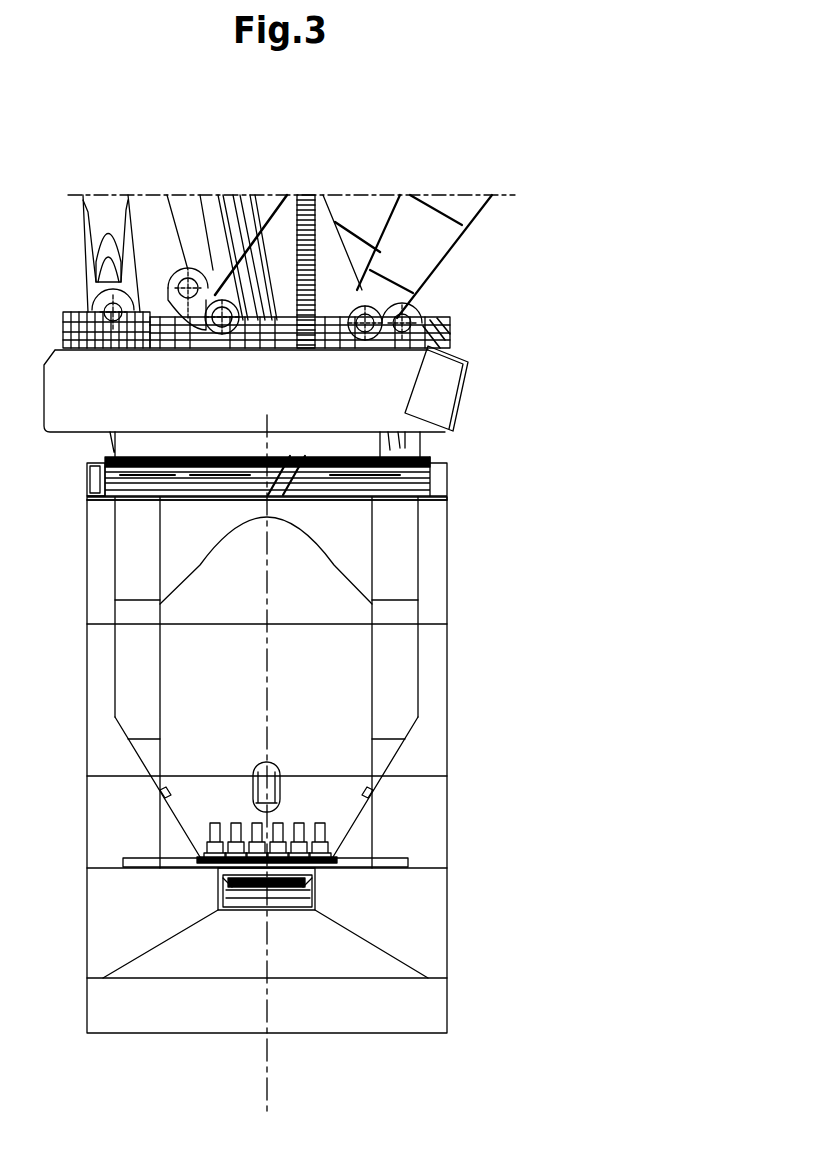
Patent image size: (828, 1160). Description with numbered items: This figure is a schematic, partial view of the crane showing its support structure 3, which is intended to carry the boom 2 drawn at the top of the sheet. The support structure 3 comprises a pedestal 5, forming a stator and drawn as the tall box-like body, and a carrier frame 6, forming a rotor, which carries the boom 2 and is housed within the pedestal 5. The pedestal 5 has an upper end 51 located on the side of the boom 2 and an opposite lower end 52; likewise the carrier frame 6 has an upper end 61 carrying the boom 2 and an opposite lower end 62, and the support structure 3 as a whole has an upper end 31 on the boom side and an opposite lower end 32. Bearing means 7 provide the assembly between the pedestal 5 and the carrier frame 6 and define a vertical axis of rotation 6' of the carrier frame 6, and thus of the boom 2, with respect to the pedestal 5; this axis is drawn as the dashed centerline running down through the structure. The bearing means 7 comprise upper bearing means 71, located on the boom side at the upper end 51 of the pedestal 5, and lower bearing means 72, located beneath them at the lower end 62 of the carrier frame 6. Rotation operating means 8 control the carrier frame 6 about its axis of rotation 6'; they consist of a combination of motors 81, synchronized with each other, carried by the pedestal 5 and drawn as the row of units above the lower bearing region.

The boom 2 is at (410, 242).
The carrier frame 6 is at (394, 461).
The upper end 61 is at (394, 461).
The bearing means 7 is at (394, 461).
The upper bearing means 71 is at (394, 461).
The upper end 51 is at (394, 461).
The upper end 31 is at (439, 482).
The support structure 3 is at (366, 765).
The pedestal 5 is at (366, 765).
The rotation operating means 8 is at (380, 846).
The motors 81 is at (335, 826).
The lower end 52 is at (431, 915).
The lower end 62 is at (431, 915).
The lower bearing means 72 is at (431, 915).
The lower end 32 is at (322, 886).
The axis of rotation 6' is at (307, 765).